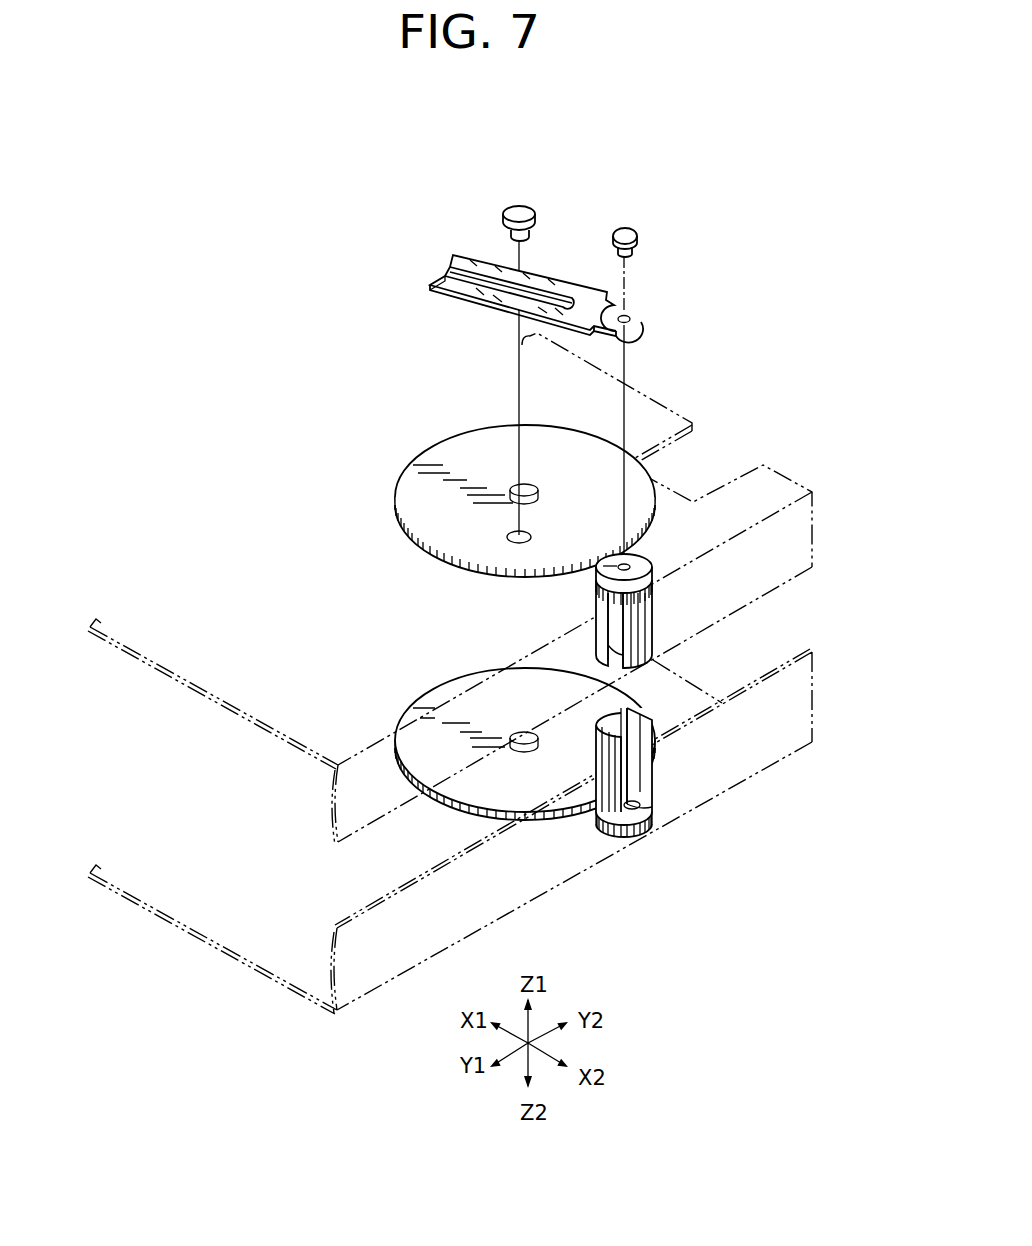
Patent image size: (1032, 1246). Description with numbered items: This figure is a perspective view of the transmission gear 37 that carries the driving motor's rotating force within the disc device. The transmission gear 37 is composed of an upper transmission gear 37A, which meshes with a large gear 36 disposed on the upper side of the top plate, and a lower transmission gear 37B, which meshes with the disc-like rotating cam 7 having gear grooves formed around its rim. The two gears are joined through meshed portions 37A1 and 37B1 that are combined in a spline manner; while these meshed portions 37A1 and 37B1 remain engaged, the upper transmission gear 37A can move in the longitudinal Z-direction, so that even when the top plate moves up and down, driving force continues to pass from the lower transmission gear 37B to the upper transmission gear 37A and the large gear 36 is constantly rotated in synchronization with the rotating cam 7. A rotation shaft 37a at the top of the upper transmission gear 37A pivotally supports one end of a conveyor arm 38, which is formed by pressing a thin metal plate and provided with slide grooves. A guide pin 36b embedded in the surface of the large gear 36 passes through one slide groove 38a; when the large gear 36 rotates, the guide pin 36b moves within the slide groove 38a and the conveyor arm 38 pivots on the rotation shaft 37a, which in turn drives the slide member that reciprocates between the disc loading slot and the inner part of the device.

The rotating cam 7 is at (458, 790).
The large gear 36 is at (446, 458).
The guide pin 36b is at (520, 207).
The transmission gear 37 is at (705, 695).
The upper transmission gear 37A is at (654, 587).
The meshed portion 37A1 is at (620, 632).
The lower transmission gear 37B is at (670, 818).
The meshed portion 37B1 is at (626, 773).
The rotation shaft 37a is at (628, 229).
The conveyor arm 38 is at (504, 272).
The slide groove 38a is at (462, 276).